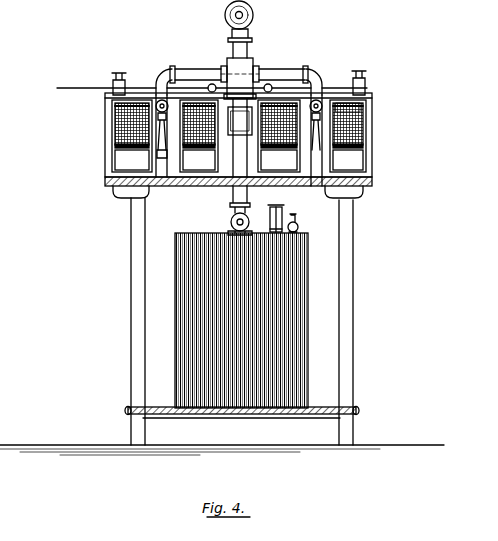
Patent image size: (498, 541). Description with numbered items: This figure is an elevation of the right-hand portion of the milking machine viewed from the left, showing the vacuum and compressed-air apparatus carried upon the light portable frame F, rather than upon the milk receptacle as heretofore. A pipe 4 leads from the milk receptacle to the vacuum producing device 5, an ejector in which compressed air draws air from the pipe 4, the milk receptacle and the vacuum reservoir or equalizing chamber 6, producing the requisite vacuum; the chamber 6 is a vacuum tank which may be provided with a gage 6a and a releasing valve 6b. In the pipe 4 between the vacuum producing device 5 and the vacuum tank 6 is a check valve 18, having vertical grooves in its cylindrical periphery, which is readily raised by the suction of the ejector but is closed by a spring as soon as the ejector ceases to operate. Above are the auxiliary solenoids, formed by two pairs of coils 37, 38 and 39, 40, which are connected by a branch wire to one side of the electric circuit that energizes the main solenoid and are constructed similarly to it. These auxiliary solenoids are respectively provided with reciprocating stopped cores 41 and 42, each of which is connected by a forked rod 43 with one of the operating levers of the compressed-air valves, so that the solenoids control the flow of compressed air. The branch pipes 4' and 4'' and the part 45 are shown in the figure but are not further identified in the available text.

The pipe 4 is at (225, 210).
The branch pipe 4' is at (239, 66).
The upper screen frame 4'' is at (371, 102).
The vacuum producing device 5 is at (252, 17).
The vacuum reservoir or equalizing chamber 6 is at (308, 370).
The gage 6a is at (283, 214).
The releasing valve 6b is at (299, 229).
The valve 18 is at (252, 60).
The auxiliary solenoid coil 37 is at (118, 154).
The auxiliary solenoid coil 38 is at (199, 160).
The auxiliary solenoid coil 39 is at (279, 160).
The auxiliary solenoid coil 40 is at (348, 160).
The reciprocating stopped core 41 is at (135, 127).
The reciprocating stopped core 42 is at (118, 112).
The forked rod 43 is at (158, 150).
The hanger bracket 45 is at (320, 184).
The portable frame F is at (354, 301).